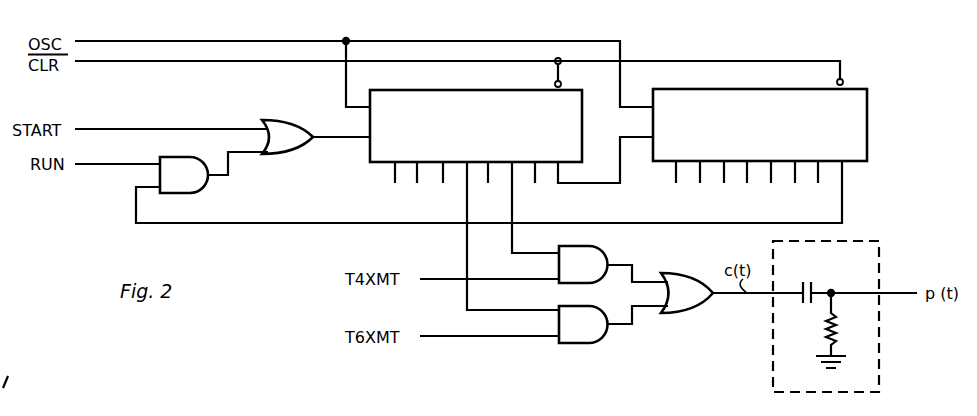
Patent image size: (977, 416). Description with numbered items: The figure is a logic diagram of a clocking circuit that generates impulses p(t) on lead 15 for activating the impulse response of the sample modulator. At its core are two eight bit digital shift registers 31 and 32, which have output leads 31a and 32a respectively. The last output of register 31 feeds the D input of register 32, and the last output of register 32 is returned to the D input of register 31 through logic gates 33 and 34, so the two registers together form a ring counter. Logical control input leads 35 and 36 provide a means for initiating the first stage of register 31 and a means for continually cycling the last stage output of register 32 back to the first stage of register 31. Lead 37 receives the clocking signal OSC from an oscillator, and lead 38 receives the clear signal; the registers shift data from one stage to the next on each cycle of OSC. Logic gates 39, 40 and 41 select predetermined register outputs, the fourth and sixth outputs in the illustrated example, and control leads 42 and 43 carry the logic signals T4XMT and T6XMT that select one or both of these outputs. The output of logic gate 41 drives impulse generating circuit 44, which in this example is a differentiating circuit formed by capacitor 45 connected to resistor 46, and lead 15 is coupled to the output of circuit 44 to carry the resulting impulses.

The lead 15 is at (907, 292).
The digital shift register 31 is at (414, 100).
The output leads 31a is at (425, 200).
The digital shift register 32 is at (732, 98).
The output leads 32a is at (771, 183).
The logic gate 33 is at (197, 188).
The logic gate 34 is at (283, 120).
The logical control input lead 35 is at (138, 128).
The logical control input lead 36 is at (133, 163).
The lead 37 is at (172, 41).
The lead 38 is at (195, 62).
The logic gate 39 is at (604, 259).
The logic gate 40 is at (603, 334).
The logic gate 41 is at (689, 273).
The control lead 42 is at (445, 278).
The control lead 43 is at (440, 337).
The impulse generating circuit 44 is at (879, 243).
The capacitor 45 is at (811, 282).
The resistor 46 is at (827, 327).